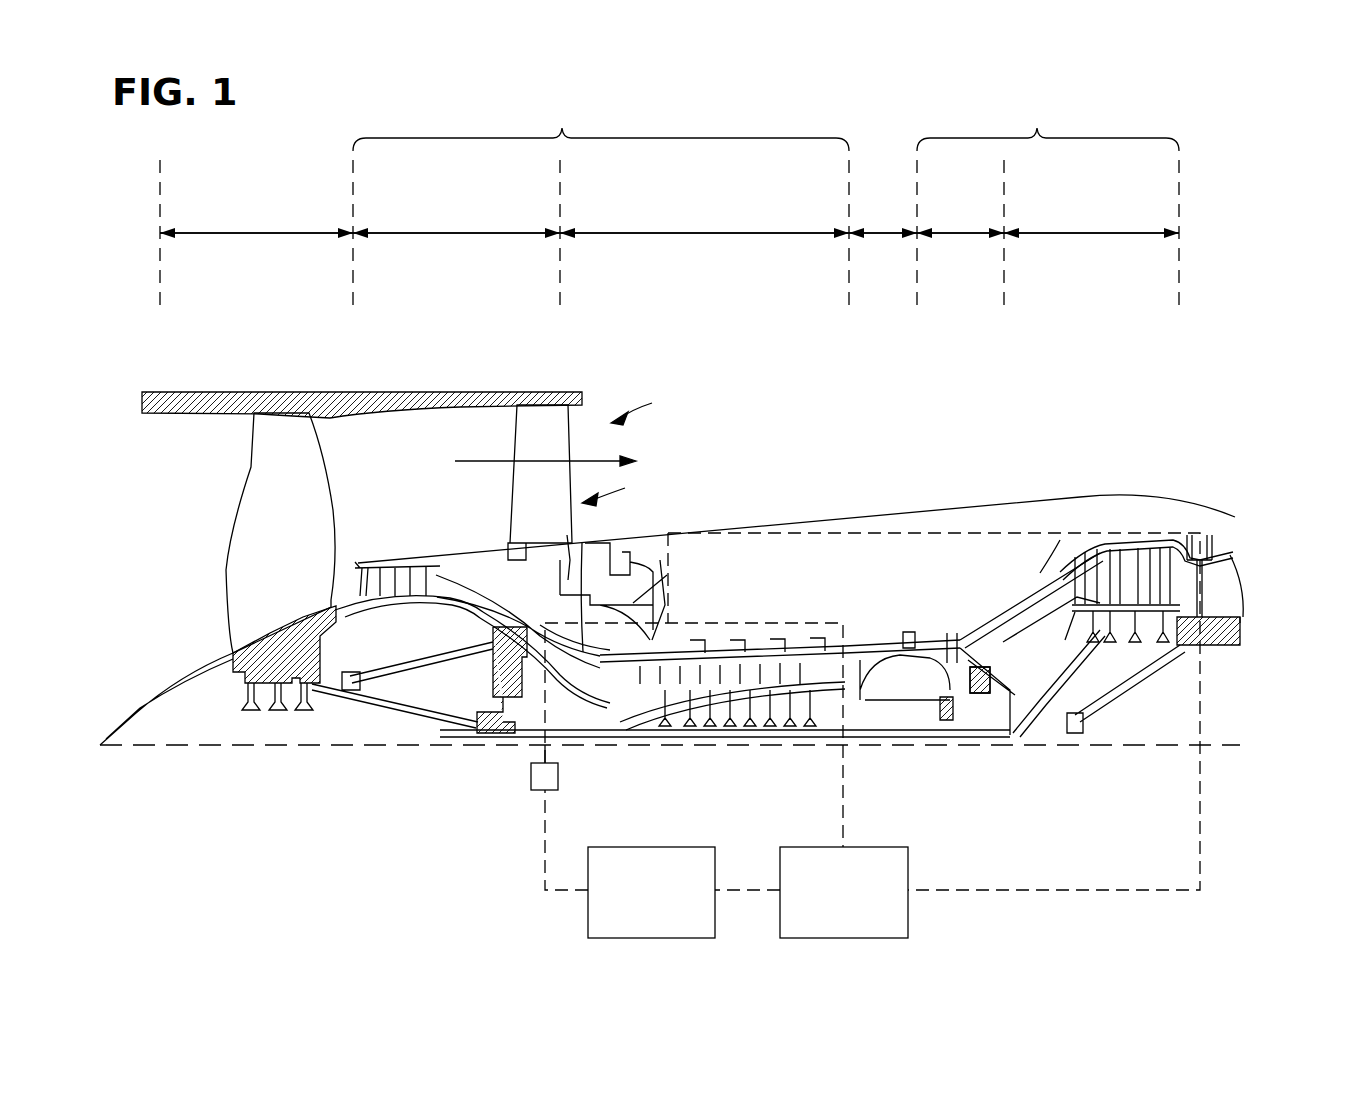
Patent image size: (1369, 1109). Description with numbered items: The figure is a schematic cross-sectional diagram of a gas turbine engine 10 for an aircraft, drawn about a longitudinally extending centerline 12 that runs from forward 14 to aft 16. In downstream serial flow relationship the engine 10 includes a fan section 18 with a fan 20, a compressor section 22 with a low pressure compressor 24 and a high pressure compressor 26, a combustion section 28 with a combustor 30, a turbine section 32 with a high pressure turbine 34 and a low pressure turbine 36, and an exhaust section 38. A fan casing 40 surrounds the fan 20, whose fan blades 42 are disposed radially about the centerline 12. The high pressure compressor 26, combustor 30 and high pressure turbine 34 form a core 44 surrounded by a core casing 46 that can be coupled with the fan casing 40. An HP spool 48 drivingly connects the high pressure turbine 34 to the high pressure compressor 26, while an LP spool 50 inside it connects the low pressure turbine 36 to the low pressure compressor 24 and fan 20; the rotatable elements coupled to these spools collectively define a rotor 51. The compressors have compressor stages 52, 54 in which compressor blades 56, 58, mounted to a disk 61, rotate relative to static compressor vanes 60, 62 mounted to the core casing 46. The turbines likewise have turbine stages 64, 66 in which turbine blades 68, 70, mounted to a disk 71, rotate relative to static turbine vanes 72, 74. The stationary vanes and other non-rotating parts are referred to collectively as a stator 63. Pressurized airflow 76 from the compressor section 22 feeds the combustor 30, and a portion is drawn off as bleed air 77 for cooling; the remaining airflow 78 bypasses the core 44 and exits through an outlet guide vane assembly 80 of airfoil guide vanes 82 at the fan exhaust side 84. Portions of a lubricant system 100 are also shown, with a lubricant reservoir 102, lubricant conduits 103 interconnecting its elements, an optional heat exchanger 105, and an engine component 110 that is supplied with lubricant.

The gas turbine engine 10 is at (882, 380).
The centerline 12 is at (253, 747).
The forward 14 is at (110, 522).
The aft 16 is at (1268, 590).
The fan section 18 is at (256, 221).
The fan 20 is at (188, 595).
The compressor section 22 is at (601, 125).
The low pressure compressor 24 is at (456, 221).
The high pressure compressor 26 is at (704, 221).
The combustion section 28 is at (883, 215).
The combustor 30 is at (885, 660).
The turbine section 32 is at (1048, 125).
The high pressure turbine 34 is at (960, 221).
The low pressure turbine 36 is at (1091, 221).
The exhaust section 38 is at (1258, 555).
The fan casing 40 is at (378, 392).
The fan blades 42 is at (310, 470).
The core 44 is at (832, 552).
The core casing 46 is at (1050, 575).
The HP spool 48 is at (840, 745).
The LP spool 50 is at (493, 735).
The rotor 51 is at (688, 748).
The compressor stages 52 is at (412, 504).
The compressor stages 54 is at (690, 553).
The compressor blades 56 is at (392, 568).
The compressor blades 58 is at (662, 645).
The static compressor vanes 60 is at (364, 565).
The disk 61 is at (385, 607).
The static compressor vanes 62 is at (657, 618).
The stator 63 is at (1112, 532).
The turbine stages 64 is at (915, 553).
The turbine stages 66 is at (1160, 440).
The turbine blades 68 is at (932, 650).
The turbine blades 70 is at (1162, 545).
The disk 71 is at (940, 745).
The static turbine vanes 72 is at (906, 655).
The static turbine vanes 74 is at (1145, 553).
The pressurized airflow 76 is at (563, 655).
The bleed air 77 is at (735, 624).
The airflow 78 is at (478, 458).
The outlet guide vane assembly 80 is at (620, 490).
The airfoil guide vanes 82 is at (518, 497).
The fan exhaust side 84 is at (645, 408).
The lubricant system 100 is at (1222, 787).
The lubricant reservoir 102 is at (672, 938).
The lubricant conduits 103 is at (770, 533).
The heat exchanger 105 is at (868, 938).
The component 110 is at (538, 790).